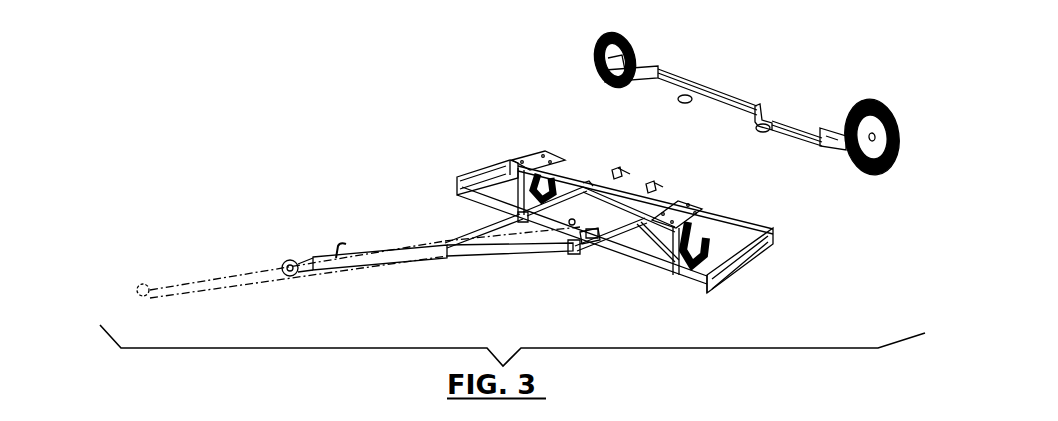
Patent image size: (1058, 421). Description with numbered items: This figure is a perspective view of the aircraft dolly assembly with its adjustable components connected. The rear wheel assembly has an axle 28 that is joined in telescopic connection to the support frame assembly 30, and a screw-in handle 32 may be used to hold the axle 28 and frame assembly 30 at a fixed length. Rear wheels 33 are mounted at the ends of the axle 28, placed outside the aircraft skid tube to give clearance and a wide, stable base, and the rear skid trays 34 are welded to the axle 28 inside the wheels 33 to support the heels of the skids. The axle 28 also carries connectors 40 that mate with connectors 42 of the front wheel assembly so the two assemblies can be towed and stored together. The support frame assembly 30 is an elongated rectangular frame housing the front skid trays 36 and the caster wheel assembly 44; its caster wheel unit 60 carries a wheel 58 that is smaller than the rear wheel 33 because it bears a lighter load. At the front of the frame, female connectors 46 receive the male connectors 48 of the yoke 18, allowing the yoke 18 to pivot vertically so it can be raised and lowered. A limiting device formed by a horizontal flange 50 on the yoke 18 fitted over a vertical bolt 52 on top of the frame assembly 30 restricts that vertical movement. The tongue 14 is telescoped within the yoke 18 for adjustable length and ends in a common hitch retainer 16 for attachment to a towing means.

The tongue 14 is at (380, 244).
The hitch retainer 16 is at (293, 277).
The yoke 18 is at (504, 258).
The axle 28 is at (738, 96).
The support frame assembly 30 is at (652, 288).
The screw-in handle 32 is at (782, 106).
The wheel 33 is at (640, 37).
The rear skid tray 34 is at (660, 70).
The front skid tray 36 is at (473, 172).
The connector 40 is at (678, 101).
The connector 42 is at (620, 172).
The caster wheel assembly 44 is at (538, 160).
The connector 46 is at (505, 213).
The connector 48 is at (518, 218).
The flange 50 is at (586, 232).
The bolt 52 is at (570, 216).
The wheel 58 is at (586, 184).
The caster wheel unit 60 is at (556, 175).